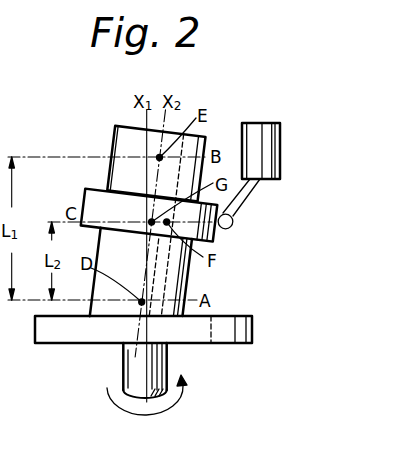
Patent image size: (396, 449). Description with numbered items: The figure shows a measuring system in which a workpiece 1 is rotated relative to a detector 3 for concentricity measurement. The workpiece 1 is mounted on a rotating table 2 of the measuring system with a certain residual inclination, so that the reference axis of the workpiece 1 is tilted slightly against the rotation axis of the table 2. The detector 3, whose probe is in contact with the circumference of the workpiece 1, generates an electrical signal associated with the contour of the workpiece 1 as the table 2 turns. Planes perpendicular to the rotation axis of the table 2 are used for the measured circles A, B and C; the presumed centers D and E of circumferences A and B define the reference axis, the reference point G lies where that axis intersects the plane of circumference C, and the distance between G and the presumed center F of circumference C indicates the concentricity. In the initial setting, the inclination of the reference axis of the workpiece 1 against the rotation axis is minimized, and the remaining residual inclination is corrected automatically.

The workpiece 1 is at (125, 139).
The rotating table 2 is at (240, 337).
The detector 3 is at (268, 147).